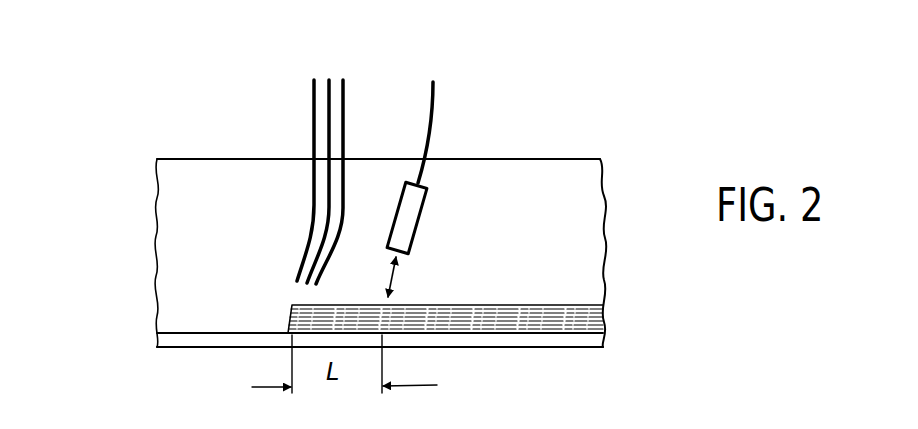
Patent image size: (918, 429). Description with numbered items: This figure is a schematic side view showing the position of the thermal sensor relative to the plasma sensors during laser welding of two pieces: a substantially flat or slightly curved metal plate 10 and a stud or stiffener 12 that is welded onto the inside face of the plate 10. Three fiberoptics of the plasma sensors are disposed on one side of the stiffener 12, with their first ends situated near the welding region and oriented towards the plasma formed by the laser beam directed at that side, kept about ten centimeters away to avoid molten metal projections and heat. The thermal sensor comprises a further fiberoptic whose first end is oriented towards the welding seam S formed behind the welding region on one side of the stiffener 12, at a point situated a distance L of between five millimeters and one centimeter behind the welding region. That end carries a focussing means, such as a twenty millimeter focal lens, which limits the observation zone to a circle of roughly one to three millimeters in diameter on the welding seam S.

The piece 10 is at (170, 343).
The piece 12 is at (181, 219).
The welding seam S is at (479, 319).